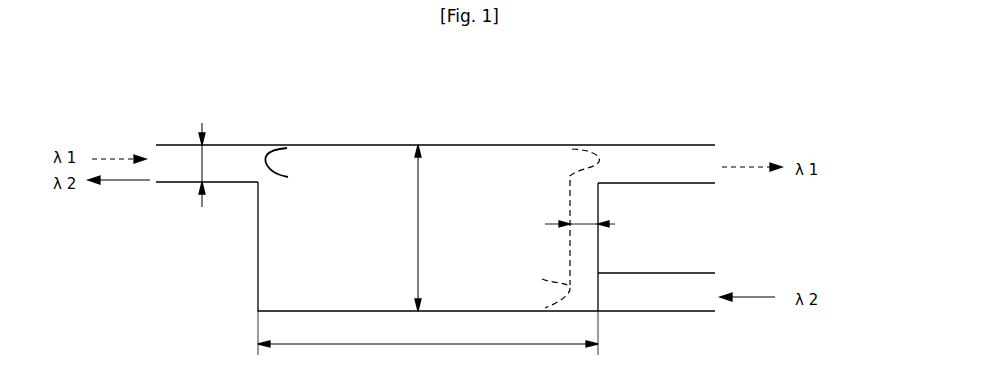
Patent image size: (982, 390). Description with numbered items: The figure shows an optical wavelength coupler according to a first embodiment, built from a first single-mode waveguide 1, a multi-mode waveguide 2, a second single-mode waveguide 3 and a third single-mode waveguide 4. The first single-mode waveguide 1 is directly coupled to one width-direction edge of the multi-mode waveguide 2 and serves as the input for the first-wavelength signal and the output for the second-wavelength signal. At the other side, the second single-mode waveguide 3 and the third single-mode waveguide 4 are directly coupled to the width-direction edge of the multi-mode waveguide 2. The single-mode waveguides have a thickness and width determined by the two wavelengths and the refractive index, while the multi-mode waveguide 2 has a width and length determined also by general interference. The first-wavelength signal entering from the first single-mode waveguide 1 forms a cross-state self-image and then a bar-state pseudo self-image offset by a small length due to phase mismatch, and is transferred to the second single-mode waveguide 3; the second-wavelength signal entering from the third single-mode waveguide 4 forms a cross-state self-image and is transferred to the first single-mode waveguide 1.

The first single-mode waveguide 1 is at (232, 160).
The multi-mode waveguide 2 is at (438, 185).
The second single-mode waveguide 3 is at (657, 165).
The third single-mode waveguide 4 is at (631, 297).